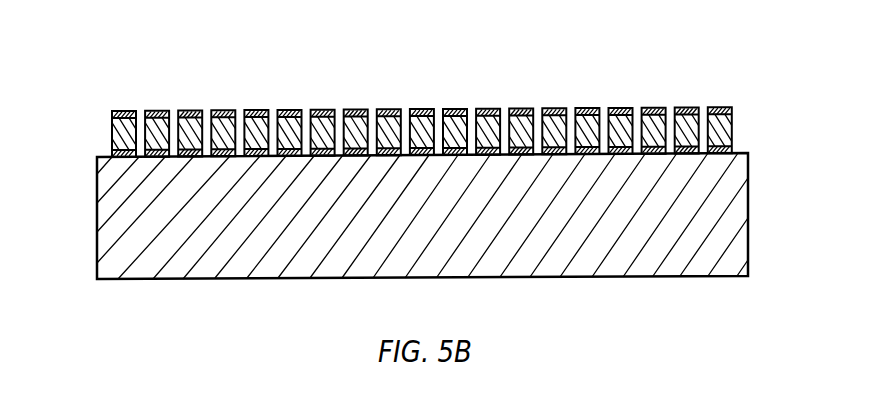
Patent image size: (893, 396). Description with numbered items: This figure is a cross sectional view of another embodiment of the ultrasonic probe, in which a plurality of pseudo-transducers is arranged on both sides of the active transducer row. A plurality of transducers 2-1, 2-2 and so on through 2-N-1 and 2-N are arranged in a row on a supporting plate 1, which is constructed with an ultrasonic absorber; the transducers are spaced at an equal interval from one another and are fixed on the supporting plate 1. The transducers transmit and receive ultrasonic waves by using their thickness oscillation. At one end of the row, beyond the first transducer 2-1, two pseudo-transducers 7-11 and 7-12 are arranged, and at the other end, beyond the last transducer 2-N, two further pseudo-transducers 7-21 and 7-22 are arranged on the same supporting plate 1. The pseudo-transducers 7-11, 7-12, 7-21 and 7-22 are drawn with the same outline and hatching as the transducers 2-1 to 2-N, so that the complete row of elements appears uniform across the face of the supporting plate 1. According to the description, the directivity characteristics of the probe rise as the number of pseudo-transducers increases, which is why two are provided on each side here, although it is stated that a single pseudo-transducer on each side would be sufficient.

The supporting plate 1 is at (740, 207).
The transducer 2-1 is at (195, 103).
The transducer 2-2 is at (232, 102).
The transducer 2-N-1 is at (619, 100).
The transducer 2-N is at (656, 100).
The pseudo-transducer 7-11 is at (157, 109).
The pseudo-transducer 7-12 is at (112, 120).
The pseudo-transducer 7-21 is at (694, 108).
The pseudo-transducer 7-22 is at (732, 118).